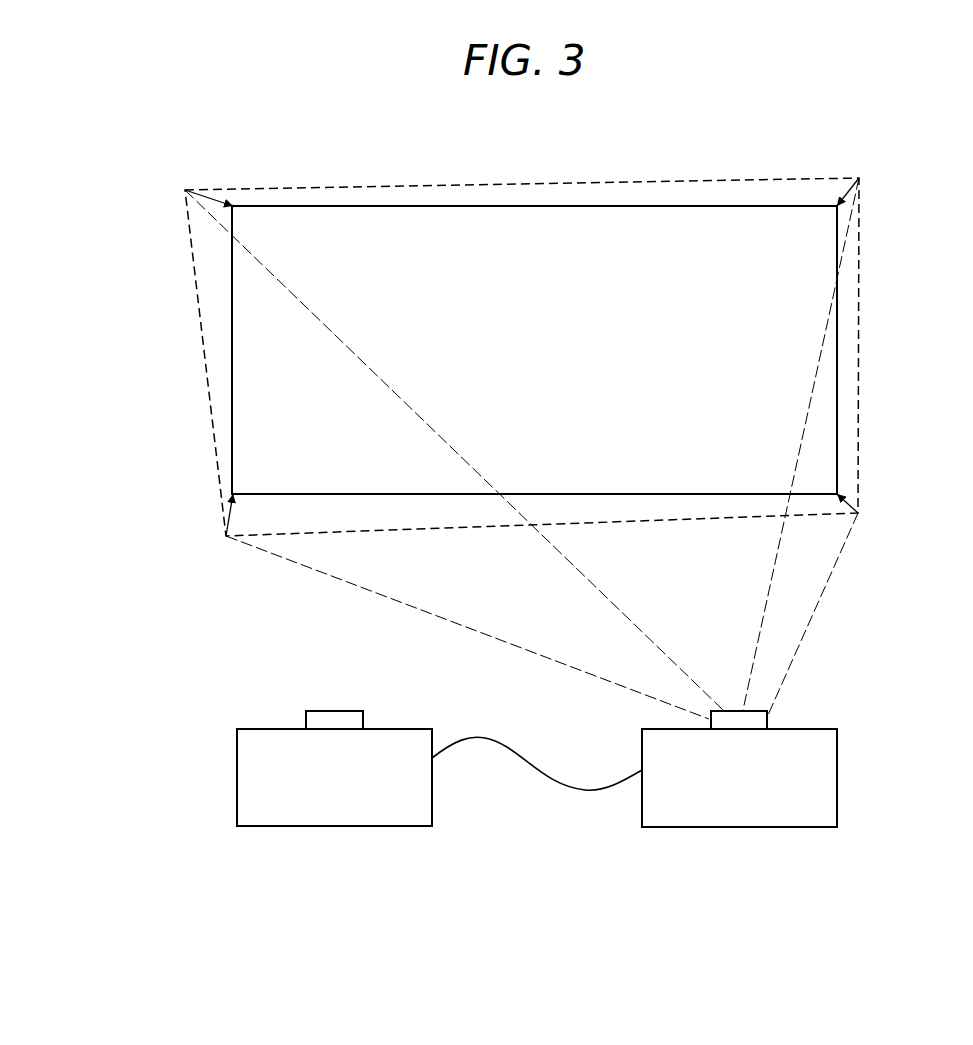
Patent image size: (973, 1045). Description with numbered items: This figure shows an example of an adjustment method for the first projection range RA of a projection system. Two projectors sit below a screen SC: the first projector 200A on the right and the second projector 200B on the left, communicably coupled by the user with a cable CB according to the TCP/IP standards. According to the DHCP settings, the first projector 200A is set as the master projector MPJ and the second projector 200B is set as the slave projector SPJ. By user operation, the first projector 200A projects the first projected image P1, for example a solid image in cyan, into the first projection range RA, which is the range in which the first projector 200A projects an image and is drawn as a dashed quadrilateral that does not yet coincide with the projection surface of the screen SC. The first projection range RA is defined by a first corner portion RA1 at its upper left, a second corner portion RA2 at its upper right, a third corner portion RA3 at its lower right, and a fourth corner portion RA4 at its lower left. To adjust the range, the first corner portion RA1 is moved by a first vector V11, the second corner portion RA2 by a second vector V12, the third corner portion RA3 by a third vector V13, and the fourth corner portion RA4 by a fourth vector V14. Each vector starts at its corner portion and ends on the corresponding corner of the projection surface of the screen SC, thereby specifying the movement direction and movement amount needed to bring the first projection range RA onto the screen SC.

The screen SC is at (232, 334).
The first projection range RA is at (577, 357).
The first projected image P1 is at (859, 378).
The first corner portion RA1 is at (183, 190).
The second corner portion RA2 is at (861, 177).
The third corner portion RA3 is at (860, 514).
The fourth corner portion RA4 is at (224, 537).
The first vector V11 is at (207, 194).
The second vector V12 is at (842, 182).
The third vector V13 is at (845, 498).
The fourth vector V14 is at (232, 520).
The second projector 200B is at (262, 768).
The slave projector SPJ is at (237, 775).
The first projector 200A is at (807, 769).
The master projector MPJ is at (837, 770).
The cable CB is at (543, 770).